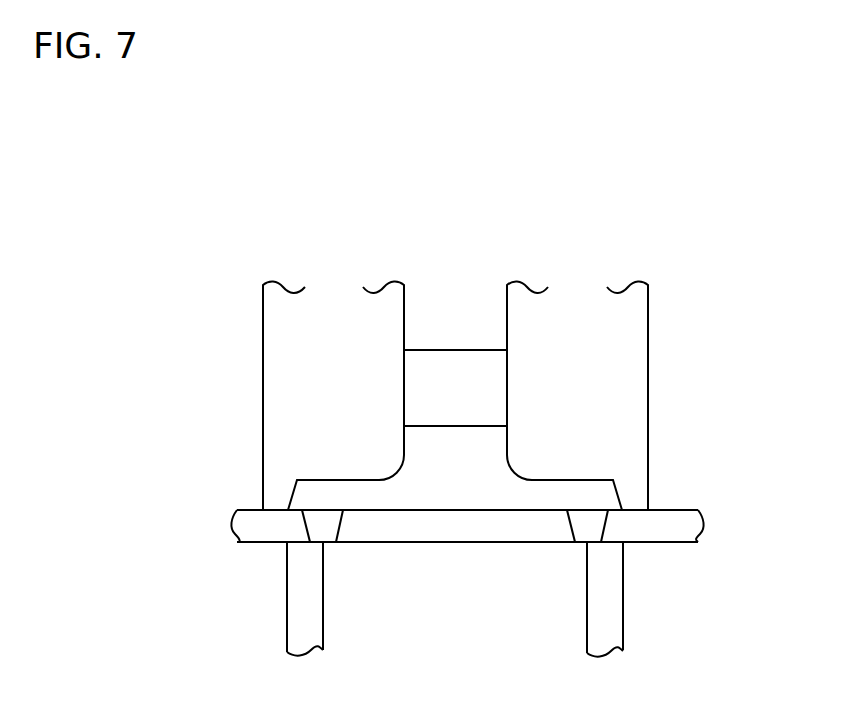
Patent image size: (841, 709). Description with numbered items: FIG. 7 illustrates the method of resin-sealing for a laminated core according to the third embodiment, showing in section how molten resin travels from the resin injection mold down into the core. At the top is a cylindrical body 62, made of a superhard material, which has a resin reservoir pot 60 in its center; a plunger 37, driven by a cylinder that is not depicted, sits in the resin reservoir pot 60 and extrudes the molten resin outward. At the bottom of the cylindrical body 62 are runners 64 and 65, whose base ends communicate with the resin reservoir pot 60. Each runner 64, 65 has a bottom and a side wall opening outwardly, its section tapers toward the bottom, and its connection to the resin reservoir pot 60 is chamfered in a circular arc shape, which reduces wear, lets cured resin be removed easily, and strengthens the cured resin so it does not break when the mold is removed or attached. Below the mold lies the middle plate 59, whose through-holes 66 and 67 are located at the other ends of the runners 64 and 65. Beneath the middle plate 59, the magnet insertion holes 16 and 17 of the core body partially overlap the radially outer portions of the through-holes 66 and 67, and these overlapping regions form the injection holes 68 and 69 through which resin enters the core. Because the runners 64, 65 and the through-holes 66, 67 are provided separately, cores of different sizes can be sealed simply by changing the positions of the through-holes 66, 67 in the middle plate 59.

The magnet insertion hole 16 is at (302, 613).
The magnet insertion hole 17 is at (606, 601).
The plunger 37 is at (453, 385).
The middle plate 59 is at (665, 527).
The resin reservoir pot 60 is at (467, 460).
The cylindrical body 62 is at (290, 403).
The runner 64 is at (371, 497).
The runner 65 is at (538, 495).
The through-hole 66 is at (317, 522).
The through-hole 67 is at (592, 505).
The injection hole 68 is at (320, 547).
The injection hole 69 is at (594, 545).